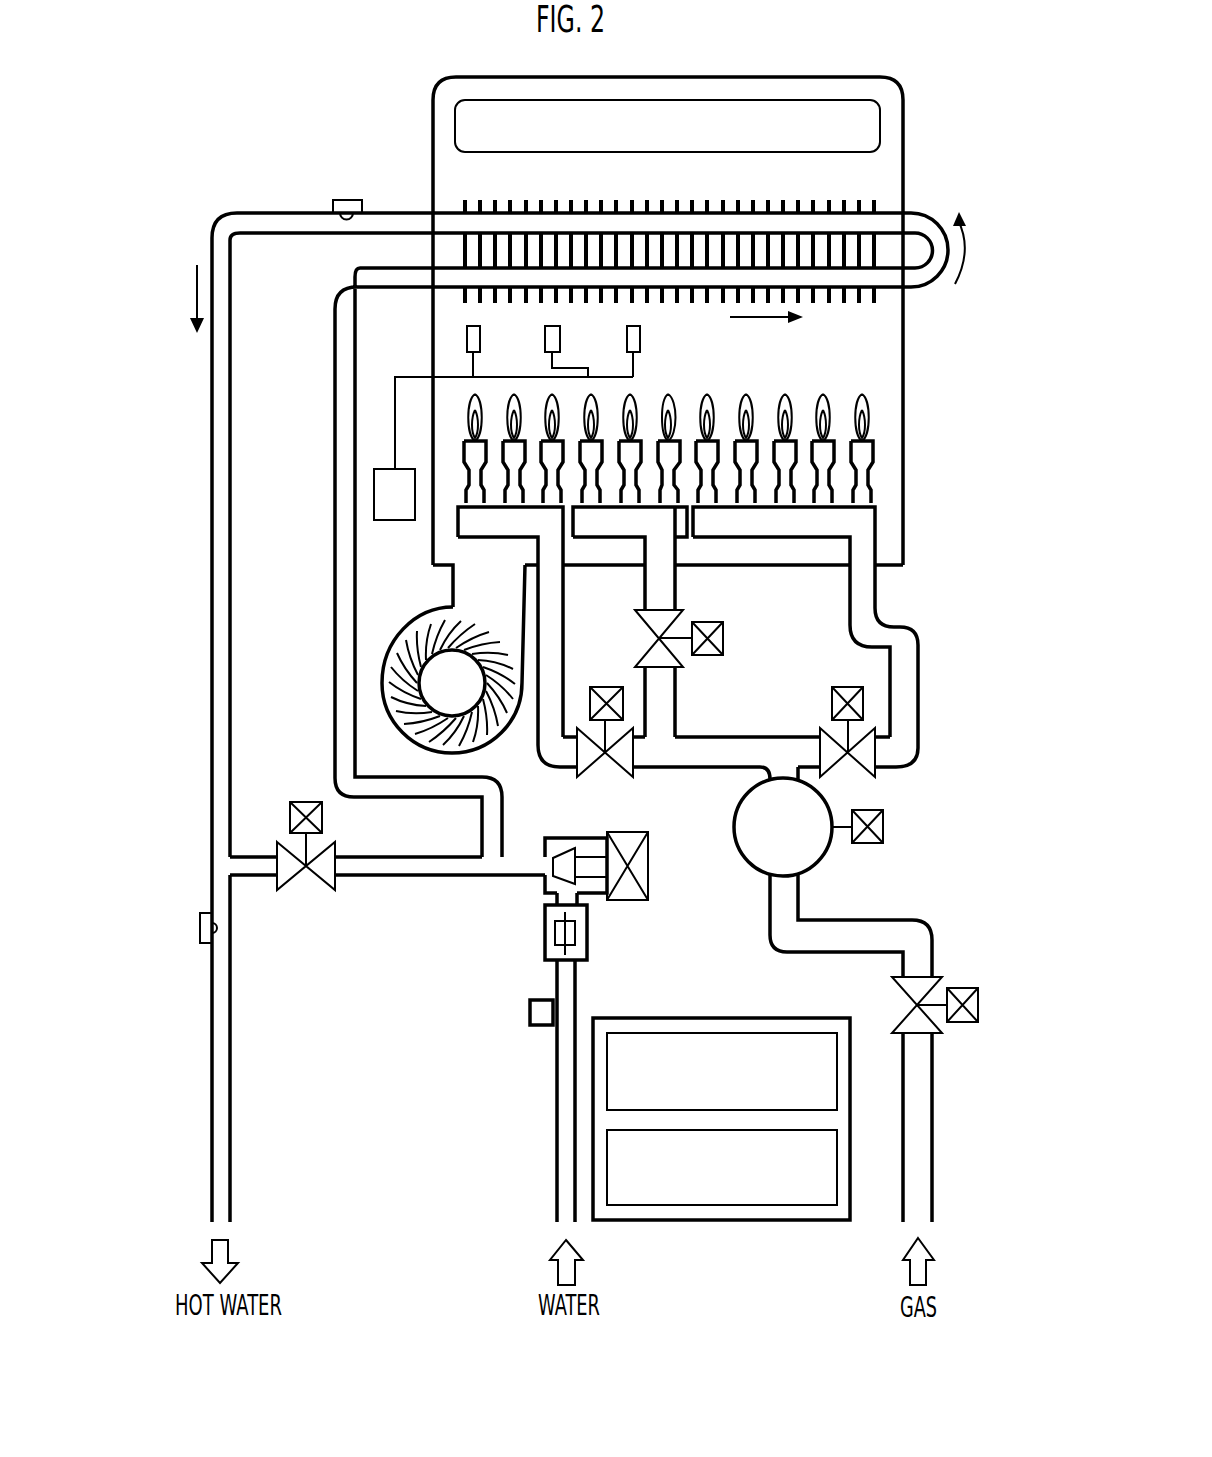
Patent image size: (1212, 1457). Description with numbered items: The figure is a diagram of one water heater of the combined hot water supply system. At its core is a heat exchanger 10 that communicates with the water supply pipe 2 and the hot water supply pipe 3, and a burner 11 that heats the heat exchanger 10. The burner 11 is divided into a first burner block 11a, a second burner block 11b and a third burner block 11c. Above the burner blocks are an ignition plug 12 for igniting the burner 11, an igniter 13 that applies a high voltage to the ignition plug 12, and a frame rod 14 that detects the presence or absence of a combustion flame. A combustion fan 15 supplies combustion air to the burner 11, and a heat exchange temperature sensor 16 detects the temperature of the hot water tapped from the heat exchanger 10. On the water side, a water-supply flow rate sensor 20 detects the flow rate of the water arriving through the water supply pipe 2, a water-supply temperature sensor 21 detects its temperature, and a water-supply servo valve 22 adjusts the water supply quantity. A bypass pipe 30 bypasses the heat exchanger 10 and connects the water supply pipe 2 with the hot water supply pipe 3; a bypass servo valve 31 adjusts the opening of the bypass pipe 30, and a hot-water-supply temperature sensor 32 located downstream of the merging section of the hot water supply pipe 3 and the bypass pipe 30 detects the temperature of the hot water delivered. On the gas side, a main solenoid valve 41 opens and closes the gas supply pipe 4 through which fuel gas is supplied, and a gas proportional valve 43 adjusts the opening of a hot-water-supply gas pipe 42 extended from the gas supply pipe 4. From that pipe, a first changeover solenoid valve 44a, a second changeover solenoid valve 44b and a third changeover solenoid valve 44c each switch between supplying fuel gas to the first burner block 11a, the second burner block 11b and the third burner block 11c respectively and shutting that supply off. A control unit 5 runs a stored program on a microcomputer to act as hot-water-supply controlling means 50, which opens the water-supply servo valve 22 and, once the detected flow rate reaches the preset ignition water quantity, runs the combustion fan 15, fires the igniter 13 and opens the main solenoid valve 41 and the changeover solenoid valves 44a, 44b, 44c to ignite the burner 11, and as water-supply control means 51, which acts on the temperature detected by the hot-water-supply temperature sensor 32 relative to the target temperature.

The water supply pipe 2 is at (418, 800).
The hot water supply pipe 3 is at (210, 656).
The gas supply pipe 4 is at (935, 1115).
The control unit 5 is at (805, 1017).
The heat exchanger 10 is at (727, 186).
The burner 11 is at (764, 385).
The first burner block 11a is at (496, 525).
The second burner block 11b is at (606, 525).
The third burner block 11c is at (768, 525).
The ignition plug 12 is at (481, 335).
The igniter 13 is at (406, 466).
The frame rod 14 is at (561, 335).
The combustion fan 15 is at (412, 750).
The heat exchange temperature sensor 16 is at (346, 198).
The water-supply flow rate sensor 20 is at (590, 938).
The water-supply temperature sensor 21 is at (530, 1012).
The water-supply servo valve 22 is at (650, 864).
The bypass pipe 30 is at (400, 878).
The bypass servo valve 31 is at (299, 878).
The hot-water-supply temperature sensor 32 is at (198, 926).
The main solenoid valve 41 is at (944, 976).
The hot-water-supply gas pipe 42 is at (800, 900).
The gas proportional valve 43 is at (829, 851).
The first changeover solenoid valve 44a is at (590, 760).
The second changeover solenoid valve 44b is at (642, 630).
The third changeover solenoid valve 44c is at (836, 765).
The hot-water-supply controlling means 50 is at (838, 1067).
The water-supply control means 51 is at (838, 1162).